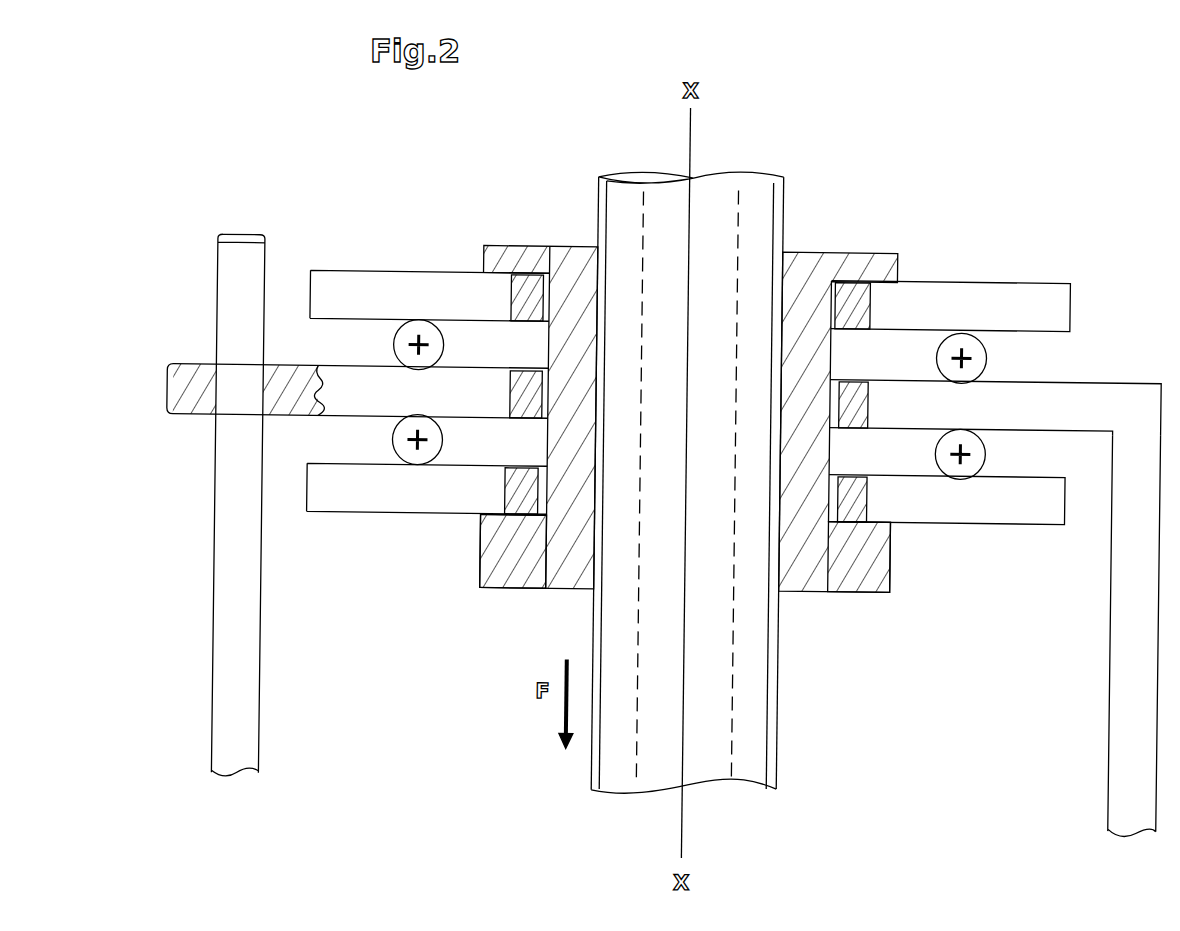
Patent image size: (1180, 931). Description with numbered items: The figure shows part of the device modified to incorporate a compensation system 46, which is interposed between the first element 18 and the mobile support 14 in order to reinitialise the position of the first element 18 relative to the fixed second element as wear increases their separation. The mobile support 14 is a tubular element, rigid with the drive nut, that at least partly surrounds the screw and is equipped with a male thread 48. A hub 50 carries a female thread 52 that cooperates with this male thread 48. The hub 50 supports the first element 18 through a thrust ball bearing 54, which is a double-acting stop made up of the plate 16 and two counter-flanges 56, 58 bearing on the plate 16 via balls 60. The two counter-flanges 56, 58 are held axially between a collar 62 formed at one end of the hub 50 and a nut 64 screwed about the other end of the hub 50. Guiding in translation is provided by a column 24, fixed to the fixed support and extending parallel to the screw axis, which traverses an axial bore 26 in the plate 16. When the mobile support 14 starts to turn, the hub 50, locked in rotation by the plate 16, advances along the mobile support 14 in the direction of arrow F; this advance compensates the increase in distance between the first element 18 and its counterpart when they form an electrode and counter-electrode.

The mobile support 14 is at (673, 491).
The plate 16 is at (1103, 376).
The first element 18 is at (1103, 765).
The column 24 is at (272, 686).
The axial bore 26 is at (217, 411).
The compensation system 46 is at (996, 504).
The male thread 48 is at (780, 758).
The hub 50 is at (827, 249).
The female thread 52 is at (780, 596).
The thrust ball bearing 54 is at (1075, 298).
The counter-flange 56 is at (353, 282).
The counter-flange 58 is at (331, 507).
The balls 60 is at (390, 354).
The collar 62 is at (481, 250).
The nut 64 is at (481, 576).